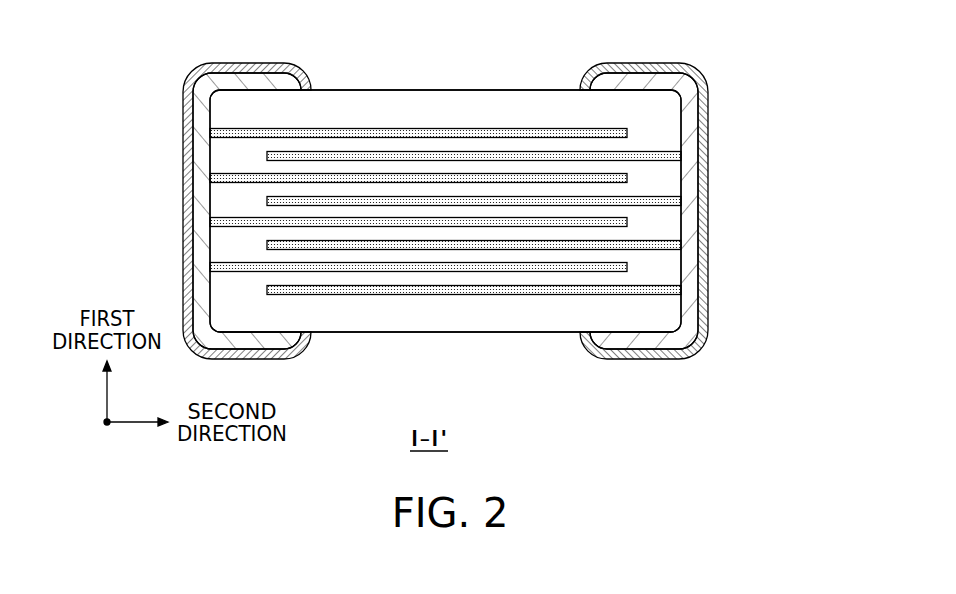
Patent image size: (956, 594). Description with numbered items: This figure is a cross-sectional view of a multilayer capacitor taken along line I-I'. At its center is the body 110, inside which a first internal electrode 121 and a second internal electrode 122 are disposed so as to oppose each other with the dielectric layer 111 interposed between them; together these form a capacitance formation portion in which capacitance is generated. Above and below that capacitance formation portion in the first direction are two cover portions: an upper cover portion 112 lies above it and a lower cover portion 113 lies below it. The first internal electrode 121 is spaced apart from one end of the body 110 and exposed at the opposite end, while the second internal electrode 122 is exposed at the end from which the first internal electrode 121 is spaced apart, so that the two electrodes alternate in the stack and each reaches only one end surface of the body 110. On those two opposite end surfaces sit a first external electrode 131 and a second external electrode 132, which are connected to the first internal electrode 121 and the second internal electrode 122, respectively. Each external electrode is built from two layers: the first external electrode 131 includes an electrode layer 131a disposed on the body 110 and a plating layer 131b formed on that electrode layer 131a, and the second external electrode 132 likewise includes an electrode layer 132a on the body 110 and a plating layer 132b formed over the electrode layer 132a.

The body 110 is at (381, 89).
The dielectric layer 111 is at (332, 137).
The upper cover portion 112 is at (453, 107).
The lower cover portion 113 is at (363, 317).
The first internal electrode 121 is at (516, 130).
The second internal electrode 122 is at (575, 155).
The first external electrode 131 is at (173, 211).
The electrode layer 131a is at (204, 143).
The plating layer 131b is at (194, 170).
The second external electrode 132 is at (721, 211).
The electrode layer 132a is at (690, 120).
The plating layer 132b is at (702, 143).